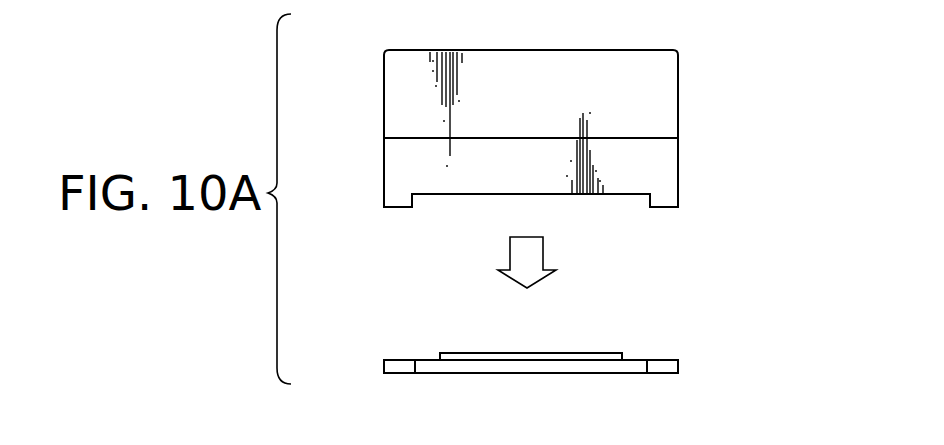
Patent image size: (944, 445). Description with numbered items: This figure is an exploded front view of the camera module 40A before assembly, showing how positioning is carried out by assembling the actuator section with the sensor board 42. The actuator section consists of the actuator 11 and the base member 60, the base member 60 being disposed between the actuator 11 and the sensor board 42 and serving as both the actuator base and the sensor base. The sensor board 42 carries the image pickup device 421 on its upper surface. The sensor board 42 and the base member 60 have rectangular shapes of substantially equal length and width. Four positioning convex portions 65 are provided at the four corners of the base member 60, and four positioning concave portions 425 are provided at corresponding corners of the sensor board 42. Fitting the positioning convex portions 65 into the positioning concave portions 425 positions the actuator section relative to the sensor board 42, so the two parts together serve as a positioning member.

The camera module 40A is at (777, 133).
The actuator 11 is at (675, 84).
The base member 60 is at (675, 167).
The positioning convex portions 65 is at (397, 208).
The sensor board 42 is at (600, 368).
The image pickup device 421 is at (458, 353).
The positioning concave portions 425 is at (383, 364).